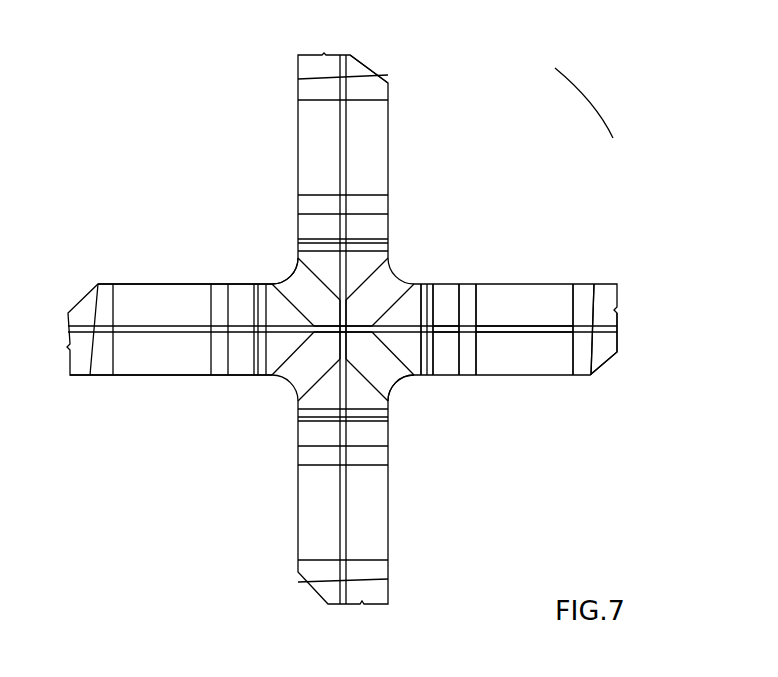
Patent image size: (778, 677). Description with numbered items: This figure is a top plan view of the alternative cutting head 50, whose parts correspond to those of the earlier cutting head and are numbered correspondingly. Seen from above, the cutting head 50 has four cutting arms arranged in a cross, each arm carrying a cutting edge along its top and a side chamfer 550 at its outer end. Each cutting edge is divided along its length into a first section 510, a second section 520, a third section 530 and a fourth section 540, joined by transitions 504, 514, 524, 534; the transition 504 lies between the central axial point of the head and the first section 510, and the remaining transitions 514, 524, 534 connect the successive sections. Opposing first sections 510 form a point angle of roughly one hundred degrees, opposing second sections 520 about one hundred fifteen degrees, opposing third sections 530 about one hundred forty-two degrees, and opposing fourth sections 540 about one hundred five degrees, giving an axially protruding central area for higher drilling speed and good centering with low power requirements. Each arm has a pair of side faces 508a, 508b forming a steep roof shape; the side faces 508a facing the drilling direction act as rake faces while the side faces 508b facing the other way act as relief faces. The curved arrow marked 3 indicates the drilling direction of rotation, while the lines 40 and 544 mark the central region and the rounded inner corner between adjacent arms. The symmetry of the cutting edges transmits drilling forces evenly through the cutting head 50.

The cutting head 50 is at (122, 127).
The central pyramid region 40 is at (345, 327).
The transition 504 is at (360, 330).
The transition 514 is at (430, 328).
The transition 524 is at (472, 328).
The transition 534 is at (582, 328).
The fourth section 540 is at (608, 330).
The inner corner fillet 544 is at (290, 273).
The side chamfer 550 is at (368, 65).
The side face 508b is at (162, 303).
The side face 508a is at (168, 355).
The first section 510 is at (387, 331).
The second section 520 is at (447, 331).
The third section 530 is at (515, 331).
The view direction arrow 3 is at (581, 98).